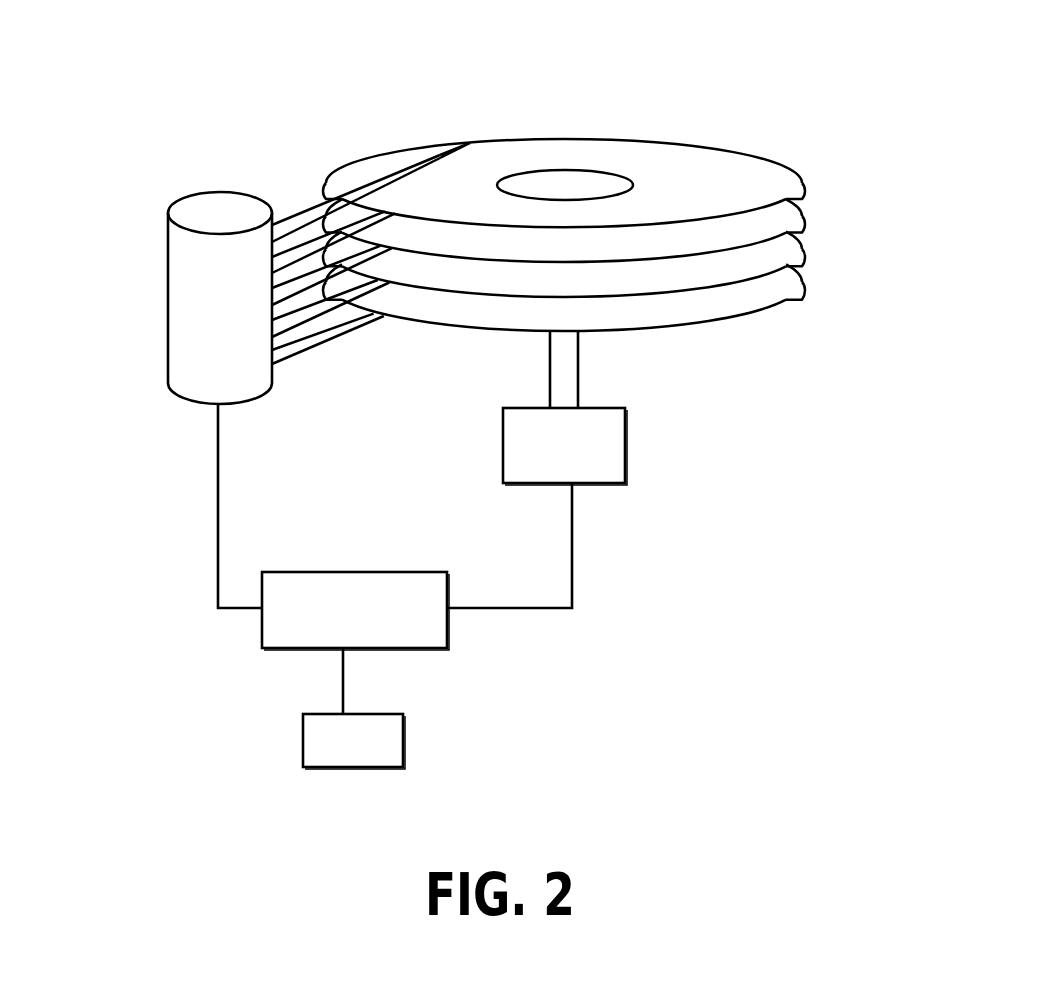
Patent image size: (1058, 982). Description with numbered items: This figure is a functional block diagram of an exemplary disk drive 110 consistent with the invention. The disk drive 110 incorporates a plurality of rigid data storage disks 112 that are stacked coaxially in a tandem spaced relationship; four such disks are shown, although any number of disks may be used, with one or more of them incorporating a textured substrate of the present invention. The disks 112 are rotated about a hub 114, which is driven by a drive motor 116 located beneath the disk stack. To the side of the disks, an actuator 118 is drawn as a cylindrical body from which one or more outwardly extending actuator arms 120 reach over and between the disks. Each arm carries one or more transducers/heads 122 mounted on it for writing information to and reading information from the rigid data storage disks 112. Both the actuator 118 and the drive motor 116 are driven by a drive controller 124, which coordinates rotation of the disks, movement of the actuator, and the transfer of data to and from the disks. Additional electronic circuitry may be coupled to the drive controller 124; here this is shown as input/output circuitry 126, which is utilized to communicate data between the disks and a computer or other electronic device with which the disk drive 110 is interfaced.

The disk drive 110 is at (645, 75).
The rigid data storage disks 112 is at (805, 288).
The hub 114 is at (572, 180).
The drive motor 116 is at (626, 452).
The actuator 118 is at (183, 341).
The actuator arms 120 is at (303, 208).
The transducers/heads 122 is at (470, 143).
The drive controller 124 is at (262, 638).
The input/output circuitry 126 is at (403, 738).